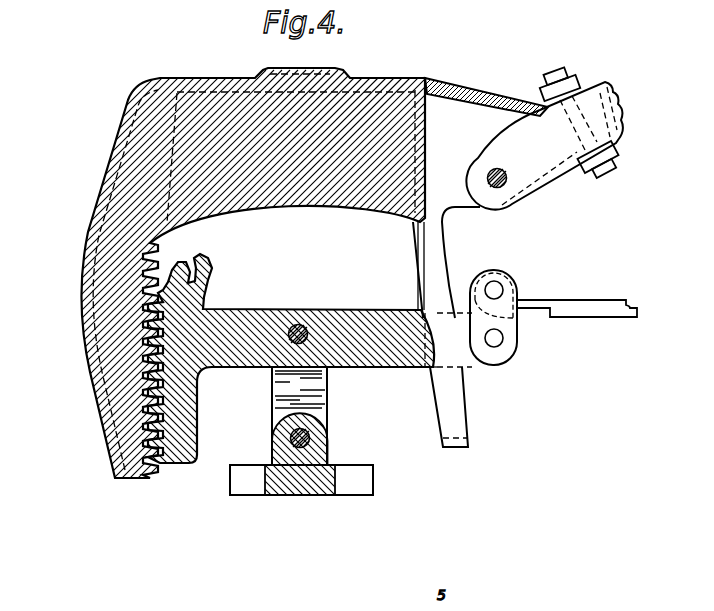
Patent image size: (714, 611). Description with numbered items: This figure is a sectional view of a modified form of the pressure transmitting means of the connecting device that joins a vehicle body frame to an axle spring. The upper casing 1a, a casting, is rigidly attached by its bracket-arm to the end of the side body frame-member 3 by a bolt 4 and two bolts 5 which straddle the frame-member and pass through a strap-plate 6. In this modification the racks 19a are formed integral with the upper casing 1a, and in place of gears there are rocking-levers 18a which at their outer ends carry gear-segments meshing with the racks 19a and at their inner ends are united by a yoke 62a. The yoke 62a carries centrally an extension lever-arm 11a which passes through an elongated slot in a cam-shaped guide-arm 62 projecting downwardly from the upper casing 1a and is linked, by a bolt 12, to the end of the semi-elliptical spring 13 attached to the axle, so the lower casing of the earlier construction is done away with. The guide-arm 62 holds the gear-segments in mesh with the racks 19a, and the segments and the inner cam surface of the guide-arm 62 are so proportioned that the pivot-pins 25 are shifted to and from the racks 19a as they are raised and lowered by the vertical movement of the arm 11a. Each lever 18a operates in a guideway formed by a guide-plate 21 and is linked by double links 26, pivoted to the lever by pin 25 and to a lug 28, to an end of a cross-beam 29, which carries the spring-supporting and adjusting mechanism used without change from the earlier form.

The upper casing 1a is at (383, 79).
The side body frame-member 3 is at (607, 115).
The bolt 4 is at (507, 175).
The bolts 5 is at (571, 80).
The strap-plate 6 is at (577, 159).
The extension lever-arm 11a is at (480, 367).
The bolt 12 is at (500, 292).
The semi-elliptical spring 13 is at (590, 307).
The rocking-levers 18a is at (240, 327).
The racks 19a is at (140, 360).
The guide-plate 21 is at (313, 436).
The pivot-pin 25 is at (300, 328).
The double links 26 is at (297, 393).
The lug 28 is at (280, 441).
The cross-beam 29 is at (318, 474).
The cam-shaped guide-arm 62 is at (463, 420).
The yoke 62a is at (414, 367).